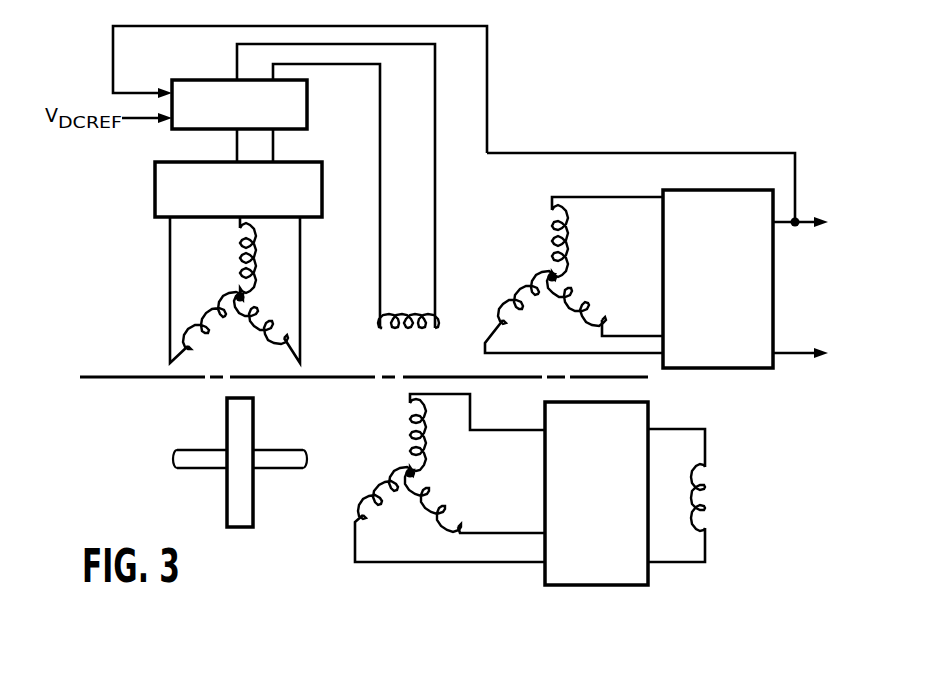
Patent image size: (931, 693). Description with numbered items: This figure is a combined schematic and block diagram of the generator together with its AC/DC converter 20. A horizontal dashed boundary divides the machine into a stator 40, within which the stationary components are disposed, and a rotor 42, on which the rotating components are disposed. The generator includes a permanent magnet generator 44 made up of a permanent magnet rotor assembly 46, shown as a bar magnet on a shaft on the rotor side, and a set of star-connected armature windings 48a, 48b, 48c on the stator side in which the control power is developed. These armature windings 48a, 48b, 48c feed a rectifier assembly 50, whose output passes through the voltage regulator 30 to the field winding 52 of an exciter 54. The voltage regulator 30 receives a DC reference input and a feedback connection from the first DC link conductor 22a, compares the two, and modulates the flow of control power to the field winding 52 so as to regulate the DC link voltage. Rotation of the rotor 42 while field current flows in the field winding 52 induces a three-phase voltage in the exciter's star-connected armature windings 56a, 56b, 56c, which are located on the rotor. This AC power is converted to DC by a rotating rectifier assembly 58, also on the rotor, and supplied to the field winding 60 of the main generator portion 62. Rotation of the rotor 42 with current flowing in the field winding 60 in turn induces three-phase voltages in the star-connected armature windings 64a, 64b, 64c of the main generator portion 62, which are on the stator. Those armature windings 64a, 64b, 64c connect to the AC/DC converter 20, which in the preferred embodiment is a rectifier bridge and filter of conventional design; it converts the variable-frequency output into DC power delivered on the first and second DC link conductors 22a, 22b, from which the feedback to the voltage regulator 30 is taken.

The AC/DC converter 20 is at (690, 200).
The first DC link conductor 22a is at (782, 220).
The second DC link conductor 22b is at (788, 356).
The voltage regulator 30 is at (308, 97).
The stator 40 is at (141, 318).
The rotor 42 is at (113, 401).
The permanent magnet generator 44 is at (175, 392).
The permanent magnet rotor assembly 46 is at (232, 438).
The armature winding 48a is at (236, 245).
The armature winding 48b is at (223, 300).
The armature winding 48c is at (291, 345).
The rectifier assembly 50 is at (165, 200).
The field winding 52 is at (390, 332).
The exciter 54 is at (442, 341).
The armature winding 56a is at (407, 420).
The armature winding 56b is at (385, 490).
The armature winding 56c is at (441, 495).
The rotating rectifier assembly 58 is at (612, 577).
The field winding 60 is at (716, 500).
The main generator portion 62 is at (652, 394).
The armature winding 64a is at (552, 222).
The armature winding 64b is at (528, 288).
The armature winding 64c is at (586, 300).